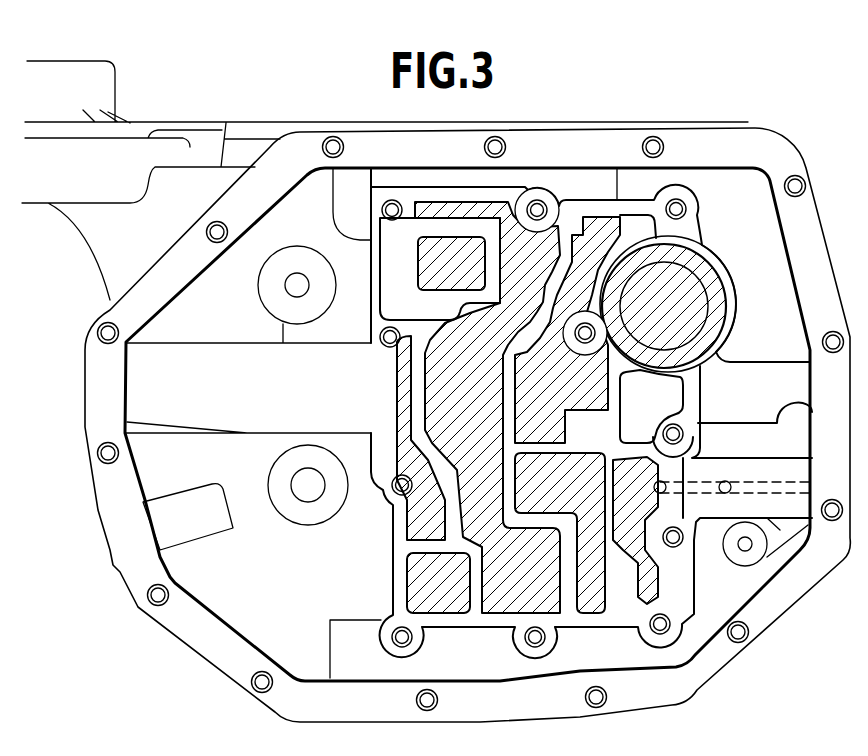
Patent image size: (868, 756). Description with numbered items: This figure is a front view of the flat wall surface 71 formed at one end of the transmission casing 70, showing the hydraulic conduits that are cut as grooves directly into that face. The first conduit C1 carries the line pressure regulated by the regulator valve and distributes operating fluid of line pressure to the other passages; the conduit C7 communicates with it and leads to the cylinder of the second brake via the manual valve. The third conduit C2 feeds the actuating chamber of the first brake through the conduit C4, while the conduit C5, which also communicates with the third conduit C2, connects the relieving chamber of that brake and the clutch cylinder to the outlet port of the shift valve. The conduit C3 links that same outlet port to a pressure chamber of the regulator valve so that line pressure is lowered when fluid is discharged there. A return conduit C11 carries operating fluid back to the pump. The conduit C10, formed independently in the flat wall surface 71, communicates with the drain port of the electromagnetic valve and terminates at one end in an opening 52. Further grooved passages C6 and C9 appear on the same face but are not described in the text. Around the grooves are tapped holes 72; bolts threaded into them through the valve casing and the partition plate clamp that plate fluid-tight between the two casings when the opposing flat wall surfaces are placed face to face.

The transmission casing 70 is at (773, 157).
The flat wall surface 71 is at (510, 196).
The tapped holes 72 is at (395, 203).
The opening 52 is at (668, 483).
The first conduit C1 is at (478, 393).
The third conduit C2 is at (574, 493).
The conduit C3 is at (400, 388).
The conduit C4 is at (677, 317).
The conduit C5 is at (576, 395).
The hydraulic passage C6 is at (646, 533).
The conduit C7 is at (463, 279).
The hydraulic passage C9 is at (653, 415).
The conduit C10 is at (731, 481).
The return conduit C11 is at (447, 603).